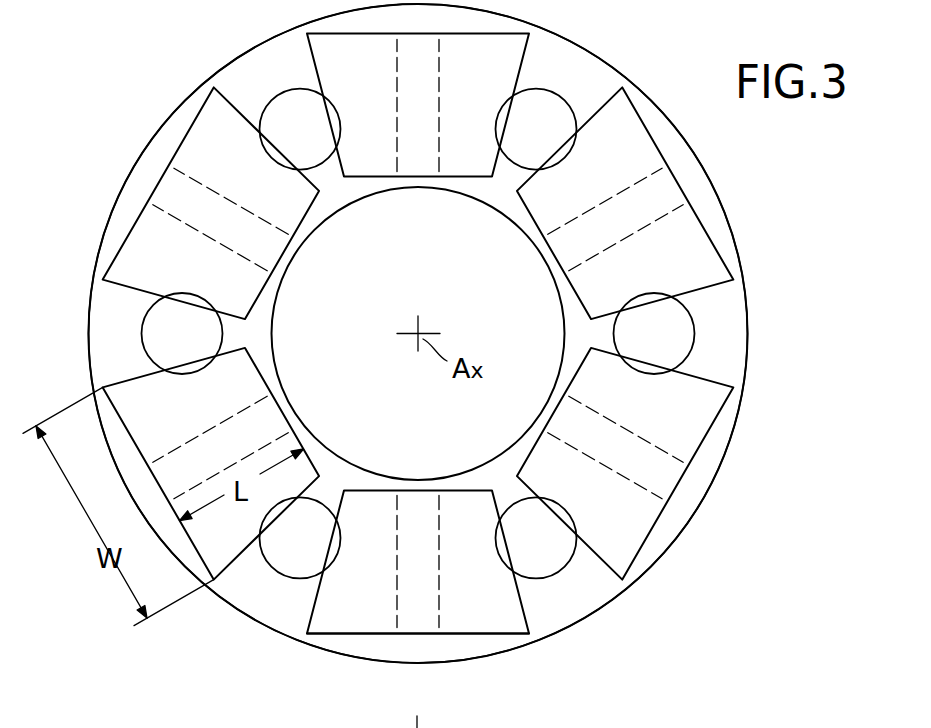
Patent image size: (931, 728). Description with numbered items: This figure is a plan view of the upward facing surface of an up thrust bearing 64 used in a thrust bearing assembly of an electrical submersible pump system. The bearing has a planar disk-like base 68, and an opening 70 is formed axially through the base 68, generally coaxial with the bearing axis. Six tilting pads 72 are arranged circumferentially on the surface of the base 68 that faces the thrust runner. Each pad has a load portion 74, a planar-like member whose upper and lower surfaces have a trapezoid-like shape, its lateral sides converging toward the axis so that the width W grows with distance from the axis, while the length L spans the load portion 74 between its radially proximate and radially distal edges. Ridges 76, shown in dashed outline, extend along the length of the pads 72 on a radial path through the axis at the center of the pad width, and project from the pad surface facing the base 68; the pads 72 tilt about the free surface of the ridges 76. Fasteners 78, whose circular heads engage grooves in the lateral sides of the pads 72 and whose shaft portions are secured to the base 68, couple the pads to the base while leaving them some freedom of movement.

The up thrust bearing 64 is at (123, 92).
The base 68 is at (258, 620).
The opening 70 is at (272, 335).
The tilting pads 72 is at (453, 641).
The load portion 74 is at (490, 602).
The ridges 76 is at (393, 594).
The fasteners 78 is at (553, 548).